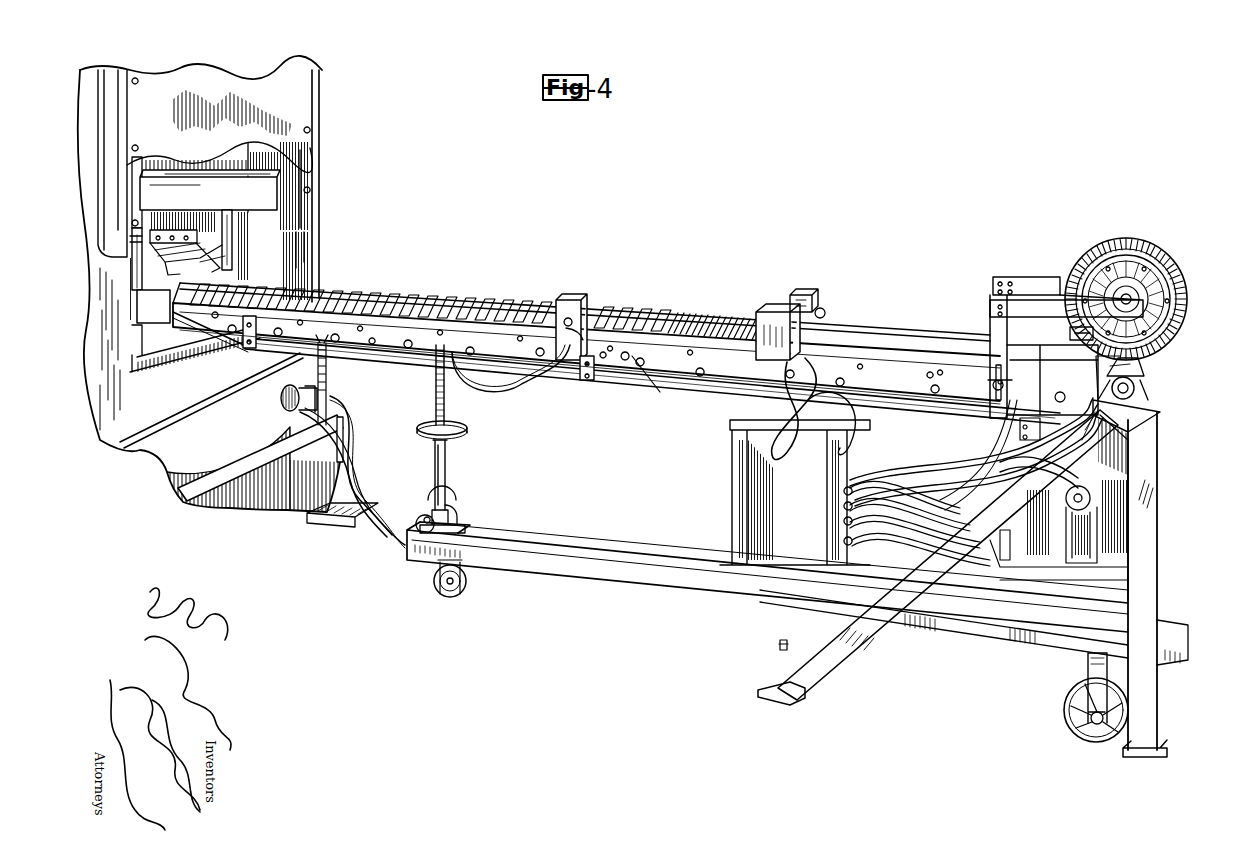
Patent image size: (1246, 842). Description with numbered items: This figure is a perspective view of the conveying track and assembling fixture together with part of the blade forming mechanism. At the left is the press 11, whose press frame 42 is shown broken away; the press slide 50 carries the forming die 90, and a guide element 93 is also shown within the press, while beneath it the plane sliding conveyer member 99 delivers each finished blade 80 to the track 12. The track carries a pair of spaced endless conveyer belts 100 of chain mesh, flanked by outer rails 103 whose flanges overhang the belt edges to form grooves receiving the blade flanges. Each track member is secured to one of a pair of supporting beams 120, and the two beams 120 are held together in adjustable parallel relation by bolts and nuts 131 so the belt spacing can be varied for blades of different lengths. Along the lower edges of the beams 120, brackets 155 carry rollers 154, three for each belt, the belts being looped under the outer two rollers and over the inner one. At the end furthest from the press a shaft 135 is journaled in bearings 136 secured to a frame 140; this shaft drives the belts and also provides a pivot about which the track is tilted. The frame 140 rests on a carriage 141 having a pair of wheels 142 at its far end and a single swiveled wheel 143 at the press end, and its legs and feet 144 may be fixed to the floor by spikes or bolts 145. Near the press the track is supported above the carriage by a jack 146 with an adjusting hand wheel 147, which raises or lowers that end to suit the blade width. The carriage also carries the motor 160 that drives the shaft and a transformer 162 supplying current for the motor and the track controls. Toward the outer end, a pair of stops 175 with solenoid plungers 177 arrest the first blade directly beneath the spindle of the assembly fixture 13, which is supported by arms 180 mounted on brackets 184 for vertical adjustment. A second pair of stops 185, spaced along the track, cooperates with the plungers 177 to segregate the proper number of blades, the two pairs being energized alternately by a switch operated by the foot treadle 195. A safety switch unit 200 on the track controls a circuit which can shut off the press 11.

The press 11 is at (353, 140).
The press frame 42 is at (322, 93).
The press slide 50 is at (272, 185).
The guide rods 93 is at (232, 226).
The forming die 90 is at (123, 237).
The sliding conveyer member 99 is at (238, 244).
The track 12 is at (697, 282).
The blade 80 is at (500, 300).
The outer rails 103 is at (368, 312).
The safety switch unit 200 is at (568, 312).
The second pair of stops 185 is at (778, 325).
The conveyer belts 100 is at (520, 370).
The brackets 155 is at (248, 350).
The rollers 154 is at (258, 350).
The nuts 131 is at (654, 382).
The supporting beams 120 is at (383, 337).
The arms 180 is at (997, 310).
The brackets 184 is at (985, 368).
The plunger 177 is at (1070, 333).
The assembly fixture 13 is at (1082, 231).
The shaft 135 is at (1144, 372).
The bearings 136 is at (1136, 390).
The stops 175 is at (1120, 404).
The frame 140 is at (1148, 512).
The feet 144 is at (1148, 757).
The foot treadle 195 is at (1182, 654).
The wheels 142 is at (1070, 722).
The motor 160 is at (1037, 540).
The carriage 141 is at (697, 577).
The spikes or bolts 145 is at (778, 646).
The transformer 162 is at (765, 500).
The adjusting hand wheel 147 is at (467, 429).
The jack 146 is at (448, 459).
The swiveled wheel 143 is at (458, 595).